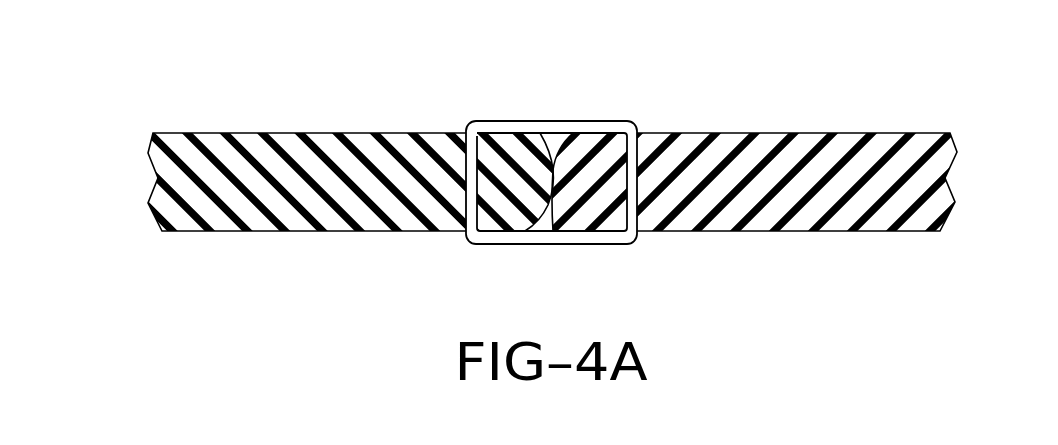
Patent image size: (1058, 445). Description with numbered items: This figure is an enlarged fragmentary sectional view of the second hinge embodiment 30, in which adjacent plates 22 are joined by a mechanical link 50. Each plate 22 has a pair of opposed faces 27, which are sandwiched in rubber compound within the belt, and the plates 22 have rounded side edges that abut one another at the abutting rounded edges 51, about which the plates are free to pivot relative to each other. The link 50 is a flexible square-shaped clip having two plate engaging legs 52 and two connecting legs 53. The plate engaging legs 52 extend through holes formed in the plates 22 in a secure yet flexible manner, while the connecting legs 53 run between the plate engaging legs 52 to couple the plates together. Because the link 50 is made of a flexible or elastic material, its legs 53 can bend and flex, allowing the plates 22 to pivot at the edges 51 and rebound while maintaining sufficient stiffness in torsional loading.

The plate 22 is at (261, 222).
The face 27 is at (283, 132).
The panel joint 30 is at (553, 85).
The link 50 is at (582, 121).
The abutting rounded edge 51 is at (553, 231).
The plate engaging leg 52 is at (464, 202).
The connecting leg 53 is at (501, 121).